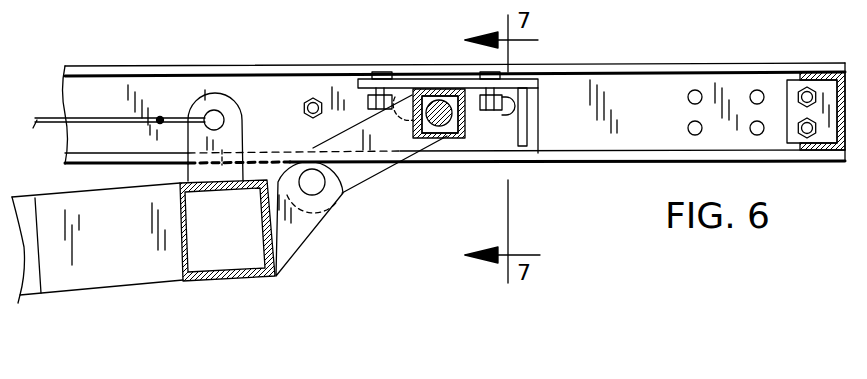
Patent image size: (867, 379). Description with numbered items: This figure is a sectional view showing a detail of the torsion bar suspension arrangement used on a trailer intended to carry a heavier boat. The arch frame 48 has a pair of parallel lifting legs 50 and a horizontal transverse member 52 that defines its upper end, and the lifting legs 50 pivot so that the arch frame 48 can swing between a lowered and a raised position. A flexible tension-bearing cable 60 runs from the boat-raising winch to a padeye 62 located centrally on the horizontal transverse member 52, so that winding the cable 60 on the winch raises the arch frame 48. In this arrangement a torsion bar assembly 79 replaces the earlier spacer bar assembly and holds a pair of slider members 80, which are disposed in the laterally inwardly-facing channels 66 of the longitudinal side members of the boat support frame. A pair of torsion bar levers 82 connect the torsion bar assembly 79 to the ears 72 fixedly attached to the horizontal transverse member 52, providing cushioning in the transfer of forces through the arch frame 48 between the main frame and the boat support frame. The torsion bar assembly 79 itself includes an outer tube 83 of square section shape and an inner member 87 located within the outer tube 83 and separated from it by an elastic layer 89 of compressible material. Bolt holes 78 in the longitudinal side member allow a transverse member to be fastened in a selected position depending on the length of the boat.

The arch frame 48 is at (162, 282).
The lifting leg 50 is at (30, 280).
The horizontal transverse member 52 is at (230, 278).
The cable 60 is at (105, 117).
The padeye 62 is at (205, 93).
The channel 66 is at (638, 110).
The ear 72 is at (298, 237).
The bolt holes 78 is at (700, 92).
The torsion bar assembly 79 is at (465, 138).
The slider member 80 is at (295, 95).
The torsion bar lever 82 is at (360, 173).
The outer tube 83 is at (460, 138).
The inner member 87 is at (433, 138).
The elastic layer 89 is at (450, 138).